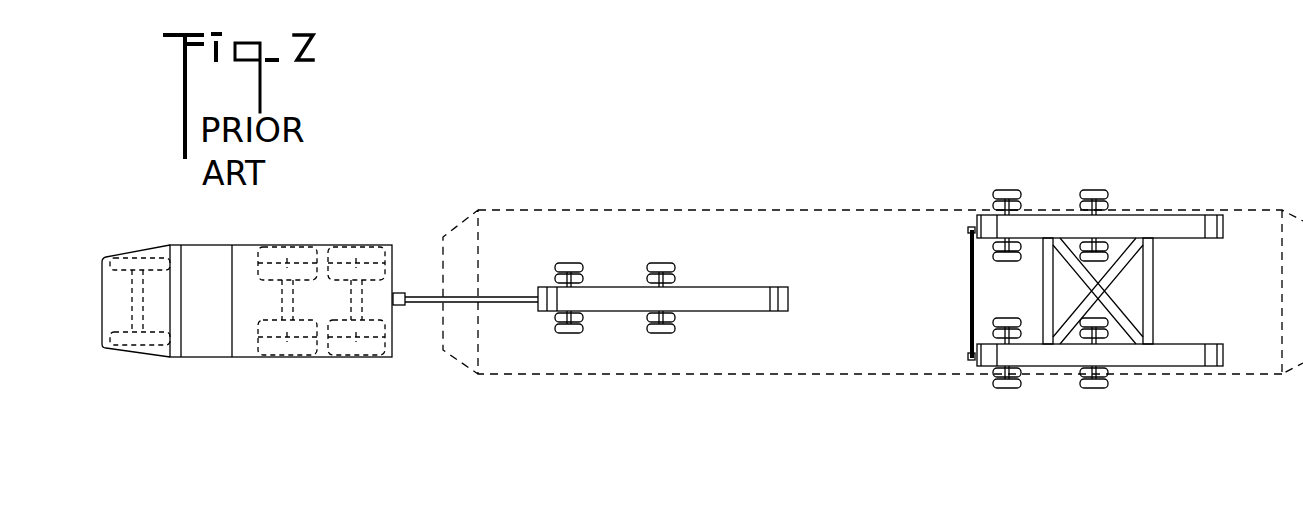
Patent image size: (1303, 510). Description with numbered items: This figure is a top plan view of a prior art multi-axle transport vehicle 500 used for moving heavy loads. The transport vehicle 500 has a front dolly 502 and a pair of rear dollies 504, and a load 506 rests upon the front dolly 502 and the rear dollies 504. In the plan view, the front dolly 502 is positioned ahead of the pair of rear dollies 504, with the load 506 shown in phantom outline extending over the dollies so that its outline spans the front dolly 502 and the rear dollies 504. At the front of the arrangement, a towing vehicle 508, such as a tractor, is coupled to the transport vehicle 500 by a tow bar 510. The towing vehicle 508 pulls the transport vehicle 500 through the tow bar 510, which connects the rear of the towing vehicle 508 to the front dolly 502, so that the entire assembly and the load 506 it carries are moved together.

The multi-axle transport vehicle 500 is at (400, 155).
The front dolly 502 is at (610, 296).
The rear dollies 504 is at (1083, 232).
The load 506 is at (828, 231).
The towing vehicle 508 is at (310, 246).
The tow bar 510 is at (428, 298).